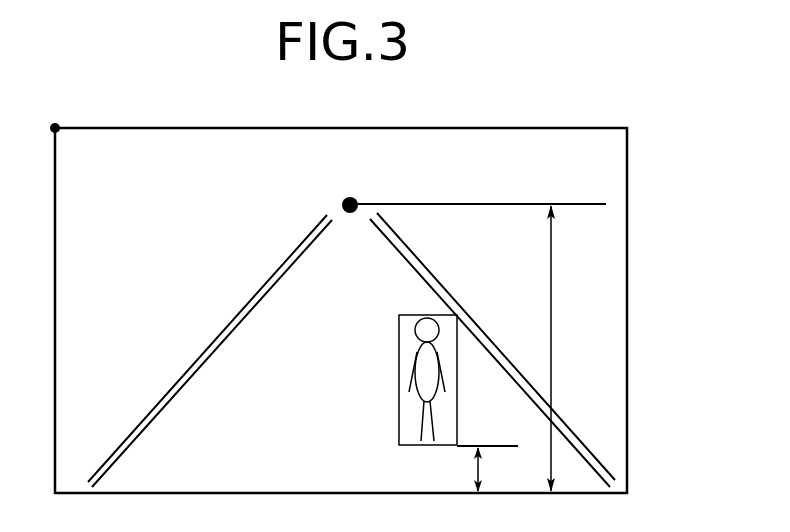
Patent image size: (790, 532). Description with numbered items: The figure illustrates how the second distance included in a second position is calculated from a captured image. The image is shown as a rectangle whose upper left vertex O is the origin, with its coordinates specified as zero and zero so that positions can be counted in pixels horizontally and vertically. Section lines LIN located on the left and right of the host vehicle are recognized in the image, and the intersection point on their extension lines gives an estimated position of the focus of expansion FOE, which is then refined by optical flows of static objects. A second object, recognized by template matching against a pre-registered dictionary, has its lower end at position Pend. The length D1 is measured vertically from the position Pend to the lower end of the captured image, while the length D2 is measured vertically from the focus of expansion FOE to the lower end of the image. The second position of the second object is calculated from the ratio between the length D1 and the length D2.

The upper left vertex O is at (54, 126).
The focus of expansion FOE is at (352, 197).
The section lines LIN is at (277, 273).
The position of the lower end of the second object Pend is at (458, 445).
The length D1 is at (490, 469).
The length D2 is at (570, 348).